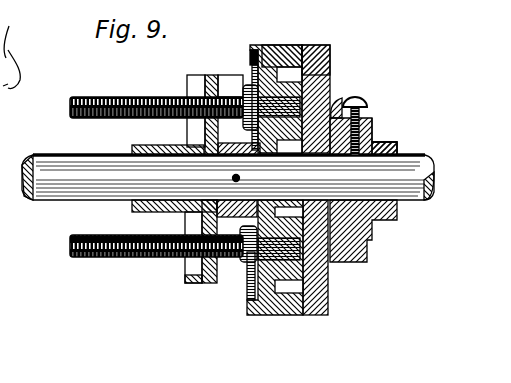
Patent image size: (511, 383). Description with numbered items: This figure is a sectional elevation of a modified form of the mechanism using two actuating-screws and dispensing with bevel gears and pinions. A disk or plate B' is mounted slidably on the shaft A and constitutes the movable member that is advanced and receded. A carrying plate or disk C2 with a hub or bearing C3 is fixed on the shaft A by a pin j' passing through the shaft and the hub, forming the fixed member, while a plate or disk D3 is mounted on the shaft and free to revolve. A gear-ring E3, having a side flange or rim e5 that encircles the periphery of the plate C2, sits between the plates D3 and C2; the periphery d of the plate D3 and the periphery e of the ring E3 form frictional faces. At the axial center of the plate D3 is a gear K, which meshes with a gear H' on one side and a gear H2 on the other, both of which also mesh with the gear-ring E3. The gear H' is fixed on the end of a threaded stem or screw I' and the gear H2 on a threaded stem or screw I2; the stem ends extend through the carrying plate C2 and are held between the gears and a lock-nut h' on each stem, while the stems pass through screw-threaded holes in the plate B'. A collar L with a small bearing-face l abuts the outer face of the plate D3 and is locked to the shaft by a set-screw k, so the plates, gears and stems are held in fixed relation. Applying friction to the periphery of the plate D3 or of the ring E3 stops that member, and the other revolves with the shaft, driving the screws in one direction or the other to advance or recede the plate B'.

The shaft A is at (425, 156).
The disk or plate B' is at (222, 104).
The plate or disk C2 is at (222, 75).
The hub or bearing C3 is at (205, 148).
The periphery of plate D3 d is at (326, 44).
The plate or disk D3 is at (331, 61).
The periphery of ring E3 e is at (275, 170).
The gear-ring E3 is at (279, 50).
The side flange or rim e5 is at (256, 48).
The lock-nut h' is at (235, 189).
The gear H' is at (363, 108).
The gear H2 is at (332, 269).
The threaded stem or screw I' is at (156, 94).
The threaded stem or screw I2 is at (156, 261).
The pin j' is at (196, 206).
The set-screw k is at (362, 107).
The gear K is at (373, 118).
The bearing-face l is at (340, 100).
The collar L is at (398, 140).